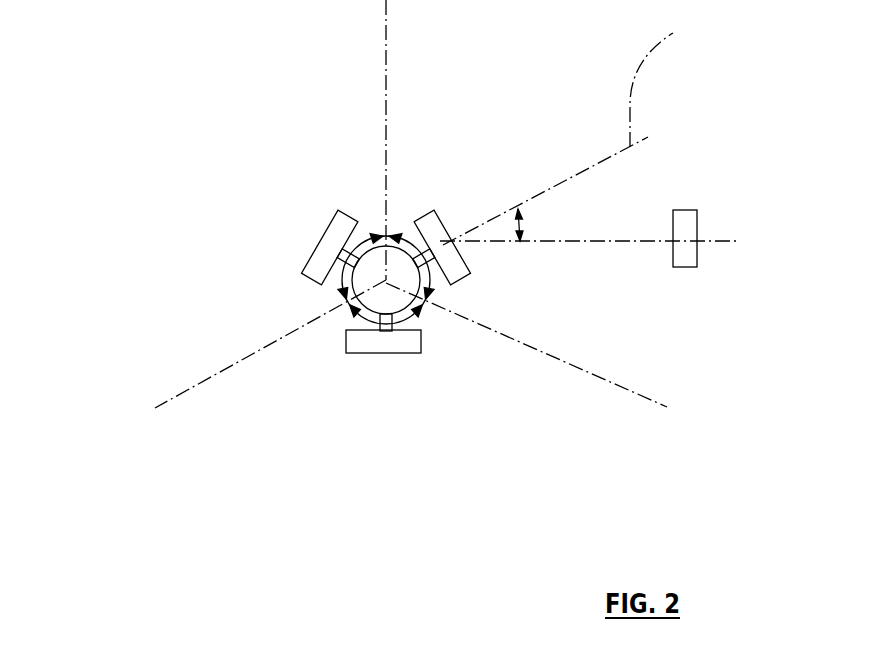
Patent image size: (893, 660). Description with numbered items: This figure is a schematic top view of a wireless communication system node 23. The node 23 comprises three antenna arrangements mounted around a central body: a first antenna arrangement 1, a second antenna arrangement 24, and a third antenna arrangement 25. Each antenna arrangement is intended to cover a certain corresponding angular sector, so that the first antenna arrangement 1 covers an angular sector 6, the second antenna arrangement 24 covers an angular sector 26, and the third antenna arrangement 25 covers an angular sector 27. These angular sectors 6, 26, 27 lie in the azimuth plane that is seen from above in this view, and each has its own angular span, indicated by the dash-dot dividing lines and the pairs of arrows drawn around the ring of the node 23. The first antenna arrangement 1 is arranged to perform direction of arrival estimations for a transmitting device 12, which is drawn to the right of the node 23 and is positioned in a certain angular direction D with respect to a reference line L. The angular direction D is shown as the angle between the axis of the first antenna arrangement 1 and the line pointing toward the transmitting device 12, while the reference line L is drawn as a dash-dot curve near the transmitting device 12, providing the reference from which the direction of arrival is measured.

The wireless communication system node 23 is at (163, 178).
The second antenna arrangement 24 is at (336, 213).
The first antenna arrangement 1 is at (432, 228).
The angular sector 6 is at (407, 242).
The third antenna arrangement 25 is at (382, 340).
The angular sector 26 is at (377, 237).
The angular sector 27 is at (422, 313).
The transmitting device 12 is at (685, 228).
The angular direction D is at (522, 228).
The reference line L is at (662, 84).